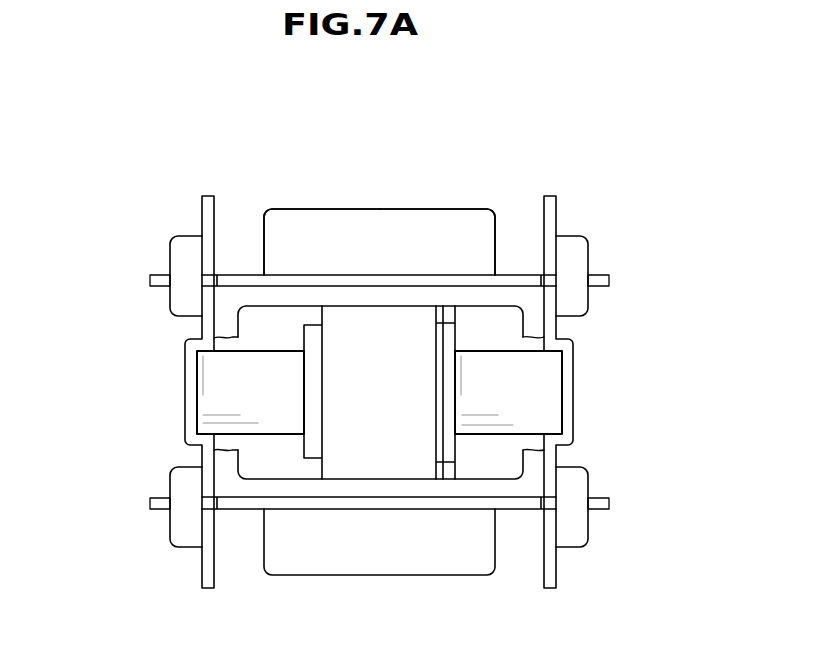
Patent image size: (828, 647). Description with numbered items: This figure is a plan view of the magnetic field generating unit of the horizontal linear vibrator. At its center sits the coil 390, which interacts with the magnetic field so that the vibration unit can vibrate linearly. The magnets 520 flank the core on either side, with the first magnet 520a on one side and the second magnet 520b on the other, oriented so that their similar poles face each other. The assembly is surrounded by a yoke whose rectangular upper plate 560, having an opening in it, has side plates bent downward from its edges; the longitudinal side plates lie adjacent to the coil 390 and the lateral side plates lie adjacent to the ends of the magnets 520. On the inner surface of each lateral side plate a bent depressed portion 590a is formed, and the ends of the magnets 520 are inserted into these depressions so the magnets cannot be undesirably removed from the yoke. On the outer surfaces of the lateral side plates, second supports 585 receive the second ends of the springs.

The magnets 520 is at (463, 150).
The first magnet 520a is at (267, 368).
The second magnet 520b is at (488, 370).
The second support 585 is at (178, 259).
The bent depressed portion 590a is at (188, 392).
The upper plate 560 is at (318, 490).
The coil 390 is at (388, 455).